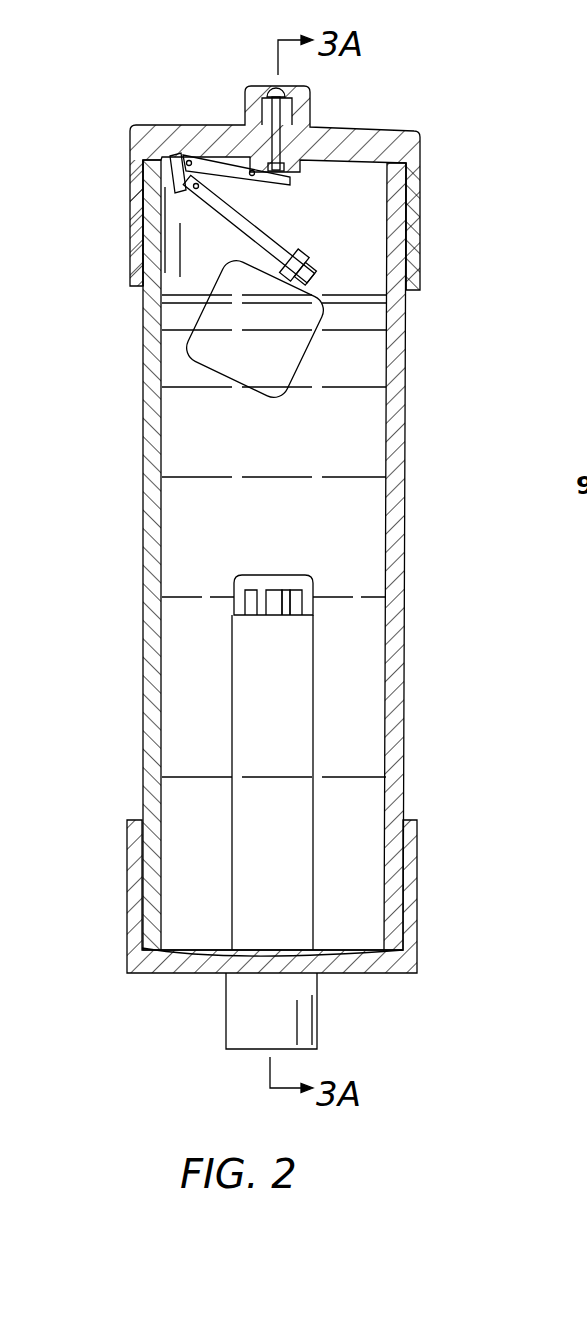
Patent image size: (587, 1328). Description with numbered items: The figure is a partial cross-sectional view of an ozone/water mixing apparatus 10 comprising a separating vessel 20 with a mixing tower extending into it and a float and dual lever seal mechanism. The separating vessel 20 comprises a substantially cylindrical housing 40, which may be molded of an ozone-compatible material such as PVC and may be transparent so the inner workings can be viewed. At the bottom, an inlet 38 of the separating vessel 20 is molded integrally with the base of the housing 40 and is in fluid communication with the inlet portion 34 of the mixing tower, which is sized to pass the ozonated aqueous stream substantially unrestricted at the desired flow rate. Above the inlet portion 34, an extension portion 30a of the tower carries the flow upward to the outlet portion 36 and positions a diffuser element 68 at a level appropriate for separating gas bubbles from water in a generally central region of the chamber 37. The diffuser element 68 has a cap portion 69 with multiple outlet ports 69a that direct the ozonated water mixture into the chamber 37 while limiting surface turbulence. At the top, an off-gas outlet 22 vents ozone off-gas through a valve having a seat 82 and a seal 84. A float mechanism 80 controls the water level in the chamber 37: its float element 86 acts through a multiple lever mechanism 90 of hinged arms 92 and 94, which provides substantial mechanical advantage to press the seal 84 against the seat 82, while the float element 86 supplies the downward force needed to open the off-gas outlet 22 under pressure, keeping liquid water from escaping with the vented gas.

The apparatus 10 is at (472, 199).
The separating vessel 20 is at (144, 415).
The off-gas outlet 22 is at (292, 112).
The extension portion 30a is at (298, 698).
The inlet portion 34 is at (315, 893).
The outlet portion 36 is at (326, 595).
The chamber 37 is at (233, 455).
The inlet 38 is at (300, 1018).
The housing 40 is at (402, 322).
The diffuser element 68 is at (233, 592).
The cap portion 69 is at (250, 607).
The outlet ports 69a is at (287, 598).
The float mechanism 80 is at (326, 238).
The seat 82 is at (267, 156).
The seal 84 is at (196, 155).
The float element 86 is at (283, 352).
The multiple lever mechanism 90 is at (237, 226).
The hinged arm 92 is at (264, 231).
The hinged arm 94 is at (227, 162).